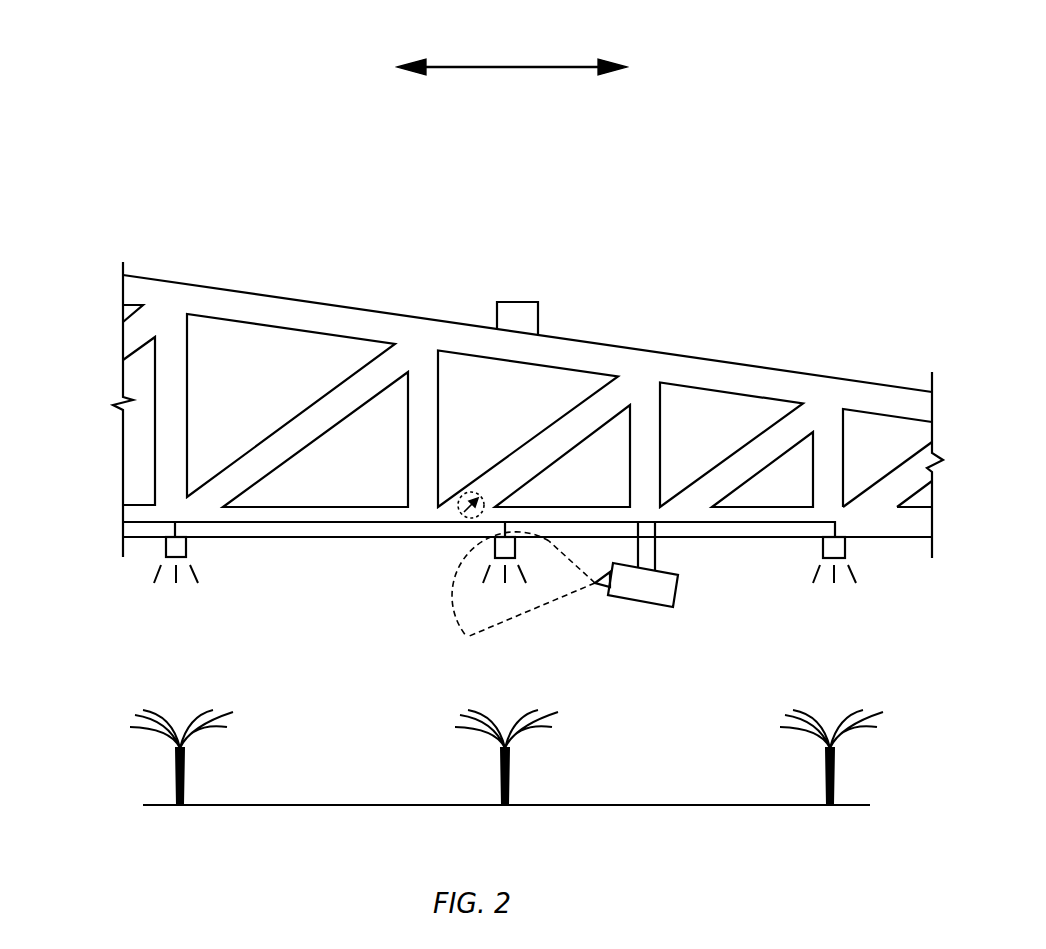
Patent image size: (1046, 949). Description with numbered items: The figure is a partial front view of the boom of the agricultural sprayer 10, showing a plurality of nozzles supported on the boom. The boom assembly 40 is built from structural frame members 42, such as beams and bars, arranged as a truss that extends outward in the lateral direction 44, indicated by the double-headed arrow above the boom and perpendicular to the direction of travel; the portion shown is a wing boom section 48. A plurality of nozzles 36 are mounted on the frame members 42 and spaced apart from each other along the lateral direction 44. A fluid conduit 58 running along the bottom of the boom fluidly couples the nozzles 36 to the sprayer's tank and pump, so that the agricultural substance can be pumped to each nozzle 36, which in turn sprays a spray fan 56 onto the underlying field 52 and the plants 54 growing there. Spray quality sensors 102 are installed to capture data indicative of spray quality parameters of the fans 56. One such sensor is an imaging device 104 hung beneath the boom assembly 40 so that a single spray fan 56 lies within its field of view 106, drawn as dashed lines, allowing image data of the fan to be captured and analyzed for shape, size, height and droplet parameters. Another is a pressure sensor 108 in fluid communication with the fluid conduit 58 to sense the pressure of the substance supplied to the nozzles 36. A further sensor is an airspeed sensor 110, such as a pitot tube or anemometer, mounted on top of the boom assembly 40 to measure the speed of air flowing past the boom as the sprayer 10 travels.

The sprayer 10 is at (121, 193).
The nozzle 36 is at (165, 548).
The boom assembly 40 is at (861, 348).
The structural frame member 42 is at (334, 301).
The lateral direction 44 is at (480, 67).
The wing boom section 48 is at (234, 297).
The field 52 is at (295, 805).
The plant 54 is at (136, 757).
The spray fan 56 is at (156, 606).
The fluid conduit 58 is at (313, 523).
The spray quality sensor 102 is at (578, 451).
The imaging device 104 is at (637, 605).
The field of view 106 is at (545, 607).
The pressure sensor 108 is at (463, 492).
The airspeed sensor 110 is at (524, 302).